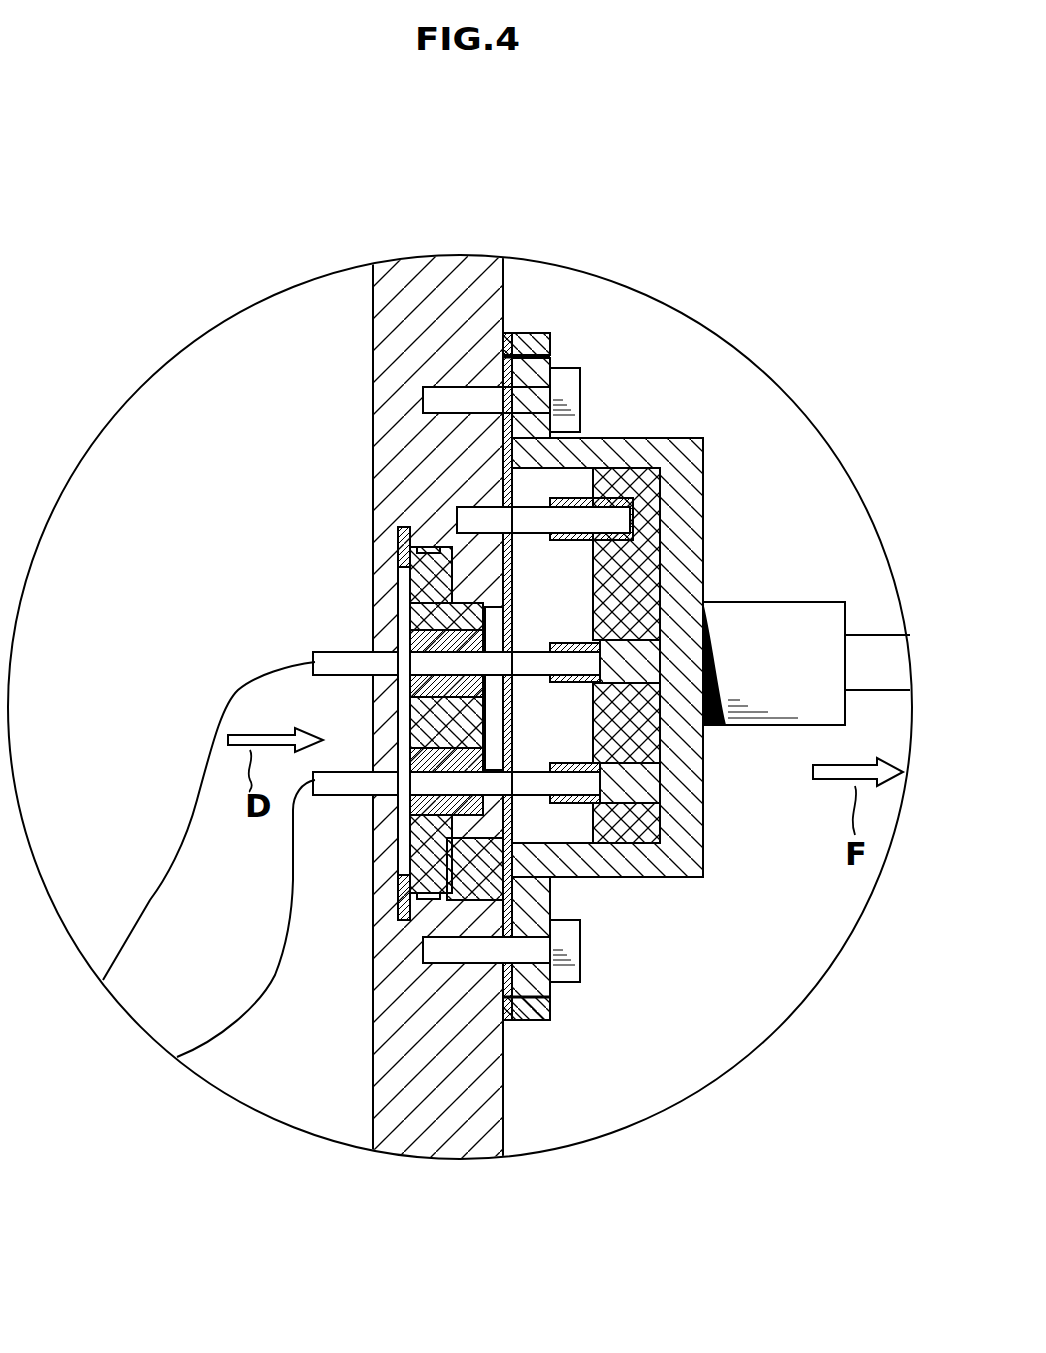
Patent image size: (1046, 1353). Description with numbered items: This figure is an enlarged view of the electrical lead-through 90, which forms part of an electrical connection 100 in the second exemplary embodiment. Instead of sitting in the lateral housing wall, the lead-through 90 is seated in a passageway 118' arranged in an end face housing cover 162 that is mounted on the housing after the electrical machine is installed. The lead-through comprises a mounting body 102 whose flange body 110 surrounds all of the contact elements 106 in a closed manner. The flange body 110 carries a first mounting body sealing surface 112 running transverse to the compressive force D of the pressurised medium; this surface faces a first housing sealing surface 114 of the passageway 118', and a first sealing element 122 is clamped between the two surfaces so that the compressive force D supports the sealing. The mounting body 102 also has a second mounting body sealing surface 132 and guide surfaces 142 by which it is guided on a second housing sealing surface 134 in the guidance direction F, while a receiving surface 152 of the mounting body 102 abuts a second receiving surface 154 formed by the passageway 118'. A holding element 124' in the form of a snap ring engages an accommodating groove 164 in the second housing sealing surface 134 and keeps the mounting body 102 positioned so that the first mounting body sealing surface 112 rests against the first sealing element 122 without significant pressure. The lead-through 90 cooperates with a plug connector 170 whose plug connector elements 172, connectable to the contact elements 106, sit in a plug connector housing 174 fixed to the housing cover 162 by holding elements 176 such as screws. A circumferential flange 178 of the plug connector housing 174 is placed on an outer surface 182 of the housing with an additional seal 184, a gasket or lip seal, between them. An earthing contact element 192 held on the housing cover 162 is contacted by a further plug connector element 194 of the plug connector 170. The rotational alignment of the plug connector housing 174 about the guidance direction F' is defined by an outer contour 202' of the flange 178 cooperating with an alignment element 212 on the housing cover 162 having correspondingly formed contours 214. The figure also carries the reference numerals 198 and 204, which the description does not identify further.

The electrical lead-through 90 is at (517, 735).
The electrical connecting unit 100 is at (716, 463).
The mounting body 102 is at (442, 846).
The contact elements 106 is at (640, 700).
The flange body 110 is at (447, 603).
The first mounting body sealing surface 112 is at (575, 965).
The first housing sealing surface 114 is at (403, 578).
The passageway 118' is at (670, 655).
The first sealing element 122 is at (515, 880).
The holding element 124' is at (307, 673).
The second mounting body sealing surface 132 is at (450, 890).
The second housing sealing surface 134 is at (400, 567).
The guide surfaces 142 is at (417, 547).
The receiving surface 152 is at (455, 600).
The second receiving surface 154 is at (400, 653).
The housing cover 162 is at (460, 353).
The accommodating groove 164 is at (398, 545).
The plug connector 170 is at (670, 434).
The plug connector elements 172 is at (620, 660).
The plug connector housing 174 is at (690, 645).
The holding elements 176 is at (458, 950).
The circumferential flange 178 is at (550, 1023).
The outer surface 182 is at (518, 350).
The additional seal 184 is at (511, 1018).
The earthing contact element 192 is at (530, 517).
The plug connector element 194 is at (640, 520).
The seal plate 198 is at (525, 1018).
The outer contour 202' is at (562, 261).
The bolt boss 204 is at (625, 495).
The alignment element 212 is at (545, 357).
The contours 214 is at (515, 367).